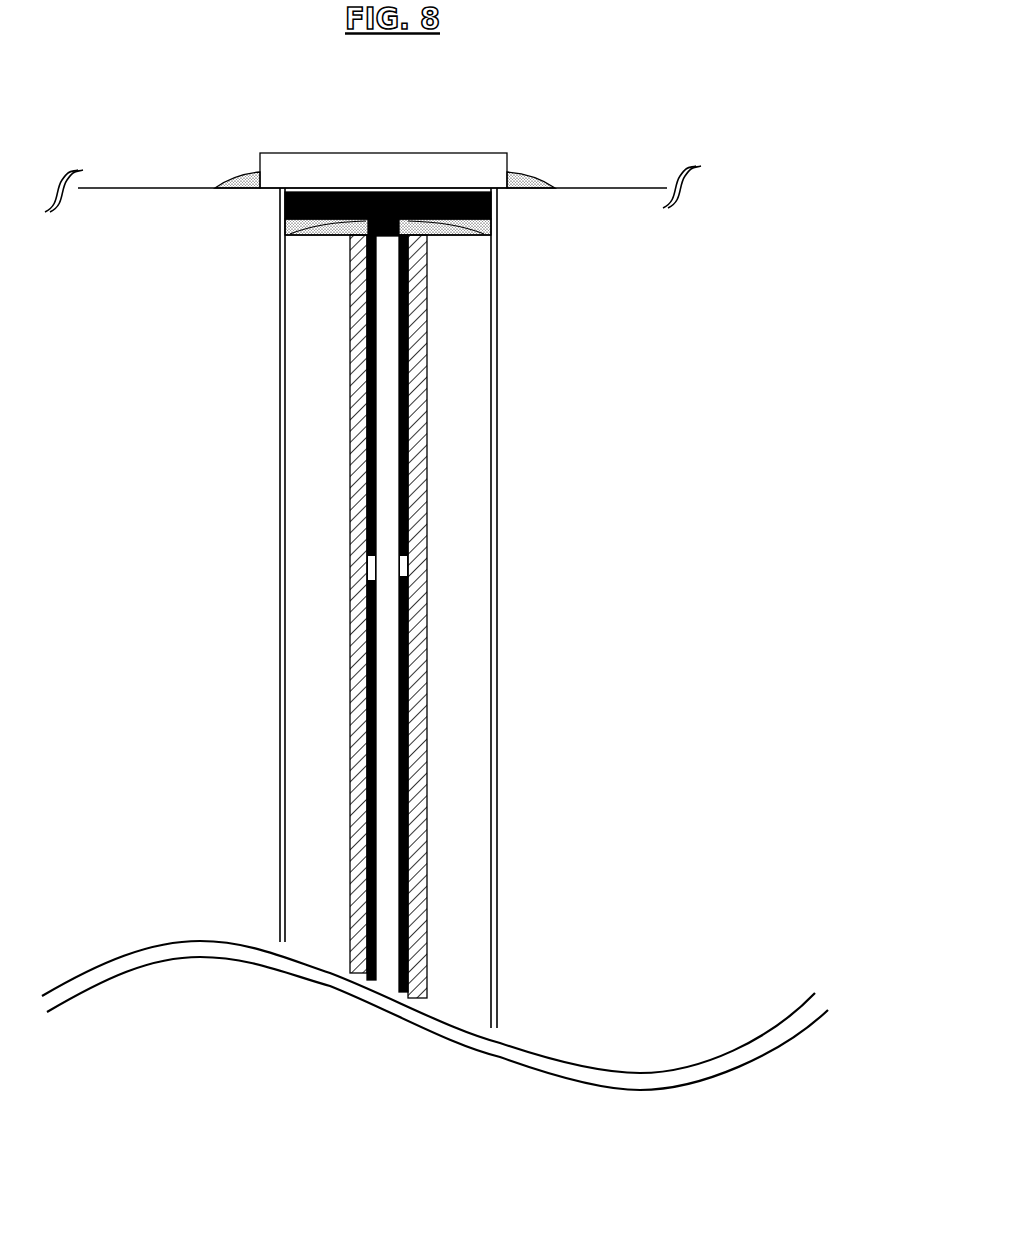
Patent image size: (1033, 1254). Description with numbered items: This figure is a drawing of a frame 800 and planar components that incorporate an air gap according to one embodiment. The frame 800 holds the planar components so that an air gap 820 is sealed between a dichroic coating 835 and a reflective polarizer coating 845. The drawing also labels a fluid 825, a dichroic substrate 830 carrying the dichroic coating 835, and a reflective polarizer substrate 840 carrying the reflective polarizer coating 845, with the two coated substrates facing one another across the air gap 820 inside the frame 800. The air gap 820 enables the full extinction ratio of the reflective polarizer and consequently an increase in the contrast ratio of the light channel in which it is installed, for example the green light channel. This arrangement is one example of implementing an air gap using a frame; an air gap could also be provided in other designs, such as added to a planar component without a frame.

The frame 800 is at (283, 200).
The fluid 825 is at (281, 227).
The air gap 820 is at (389, 811).
The dichroic substrate 830 is at (462, 399).
The dichroic coating 835 is at (430, 317).
The reflective polarizer substrate 840 is at (322, 613).
The reflective polarizer coating 845 is at (375, 712).